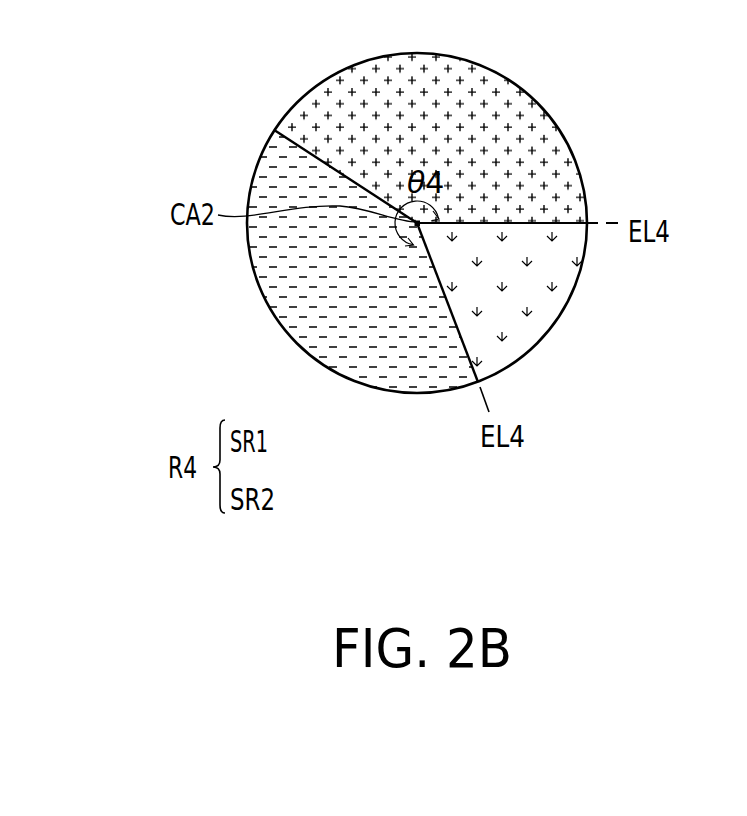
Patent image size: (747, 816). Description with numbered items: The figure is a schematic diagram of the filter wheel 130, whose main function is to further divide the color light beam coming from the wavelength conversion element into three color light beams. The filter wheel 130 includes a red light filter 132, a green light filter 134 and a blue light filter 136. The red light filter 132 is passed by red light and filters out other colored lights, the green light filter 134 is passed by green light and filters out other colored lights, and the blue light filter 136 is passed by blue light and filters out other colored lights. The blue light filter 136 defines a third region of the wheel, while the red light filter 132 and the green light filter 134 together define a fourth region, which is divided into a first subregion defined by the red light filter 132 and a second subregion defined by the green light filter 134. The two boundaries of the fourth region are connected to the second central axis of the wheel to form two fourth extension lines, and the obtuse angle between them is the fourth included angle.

The filter wheel 130 is at (729, 526).
The red light filter 132 is at (282, 272).
The green light filter 134 is at (480, 95).
The blue light filter 136 is at (540, 317).